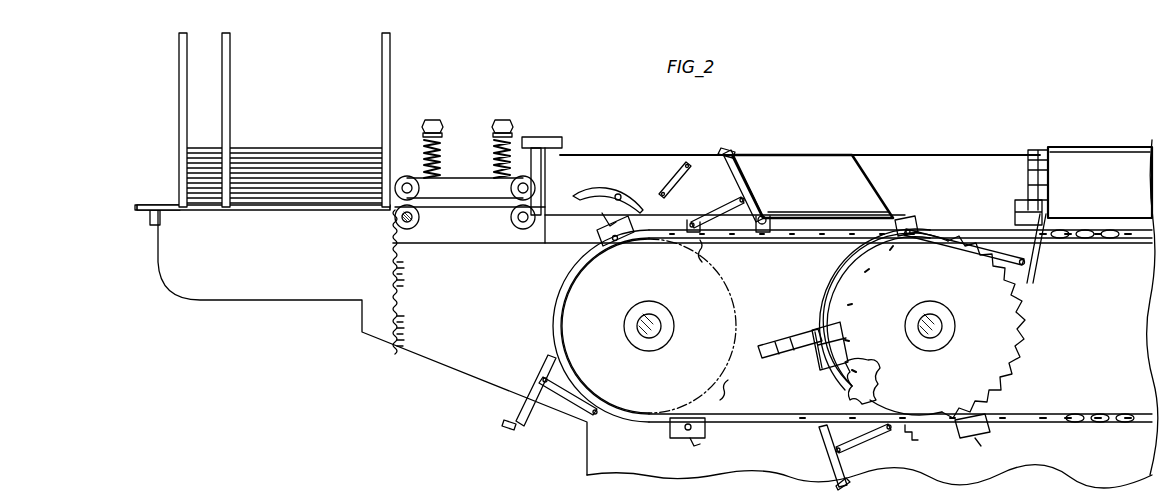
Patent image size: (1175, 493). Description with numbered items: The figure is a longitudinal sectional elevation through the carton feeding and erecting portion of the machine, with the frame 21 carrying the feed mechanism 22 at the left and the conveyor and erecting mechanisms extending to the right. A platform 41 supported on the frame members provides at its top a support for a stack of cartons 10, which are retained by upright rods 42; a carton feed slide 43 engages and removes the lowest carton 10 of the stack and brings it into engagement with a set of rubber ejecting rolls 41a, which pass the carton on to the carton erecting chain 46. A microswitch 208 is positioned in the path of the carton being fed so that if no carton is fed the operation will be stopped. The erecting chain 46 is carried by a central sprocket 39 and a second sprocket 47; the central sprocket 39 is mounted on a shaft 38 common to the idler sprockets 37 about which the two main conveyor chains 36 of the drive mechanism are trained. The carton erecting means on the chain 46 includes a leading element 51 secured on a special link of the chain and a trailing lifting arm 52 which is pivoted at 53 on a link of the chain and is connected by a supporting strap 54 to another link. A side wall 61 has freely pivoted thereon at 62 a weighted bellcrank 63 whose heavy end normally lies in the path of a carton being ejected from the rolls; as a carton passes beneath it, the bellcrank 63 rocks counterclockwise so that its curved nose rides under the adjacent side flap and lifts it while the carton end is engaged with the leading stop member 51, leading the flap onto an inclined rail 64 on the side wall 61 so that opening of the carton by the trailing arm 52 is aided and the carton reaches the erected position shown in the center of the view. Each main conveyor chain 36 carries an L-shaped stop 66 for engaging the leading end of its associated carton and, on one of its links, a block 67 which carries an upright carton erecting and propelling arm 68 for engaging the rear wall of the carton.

The carton 10 is at (282, 148).
The frame 21 is at (312, 307).
The feeding apparatus 22 is at (600, 143).
The main conveyor chain 36 is at (1085, 240).
The idler sprocket 37 is at (858, 380).
The shaft 38 is at (941, 337).
The central sprocket 39 is at (853, 288).
The platform 41 is at (250, 210).
The rubber ejecting rolls 41a is at (419, 209).
The upright rods 42 is at (187, 90).
The carton feed slide 43 is at (138, 204).
The carton erecting chain 46 is at (762, 240).
The sprocket 47 is at (735, 294).
The leading element 51 is at (905, 222).
The trailing lifting arm 52 is at (738, 177).
The pivot 53 is at (765, 217).
The supporting strap 54 is at (718, 208).
The side wall 61 is at (639, 156).
The pivot 62 is at (617, 194).
The weighted bellcrank 63 is at (626, 200).
The inclined rail 64 is at (683, 173).
The L-shaped stop 66 is at (925, 236).
The block 67 is at (820, 355).
The carton erecting and propelling arm 68 is at (763, 350).
The microswitch 208 is at (530, 138).